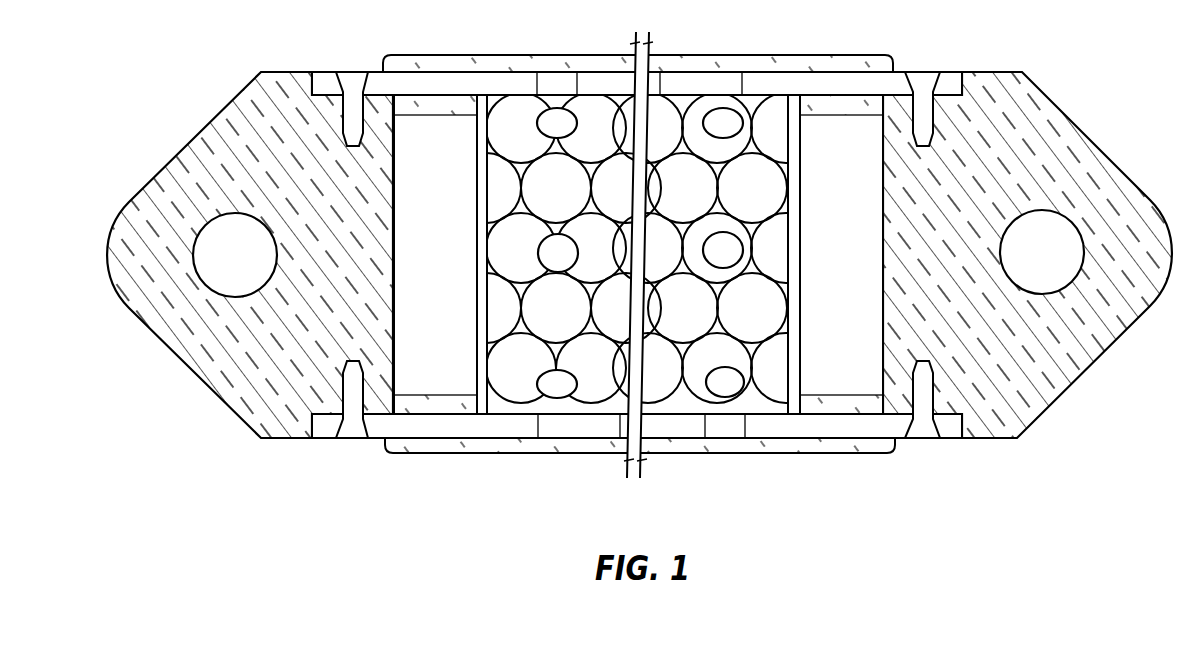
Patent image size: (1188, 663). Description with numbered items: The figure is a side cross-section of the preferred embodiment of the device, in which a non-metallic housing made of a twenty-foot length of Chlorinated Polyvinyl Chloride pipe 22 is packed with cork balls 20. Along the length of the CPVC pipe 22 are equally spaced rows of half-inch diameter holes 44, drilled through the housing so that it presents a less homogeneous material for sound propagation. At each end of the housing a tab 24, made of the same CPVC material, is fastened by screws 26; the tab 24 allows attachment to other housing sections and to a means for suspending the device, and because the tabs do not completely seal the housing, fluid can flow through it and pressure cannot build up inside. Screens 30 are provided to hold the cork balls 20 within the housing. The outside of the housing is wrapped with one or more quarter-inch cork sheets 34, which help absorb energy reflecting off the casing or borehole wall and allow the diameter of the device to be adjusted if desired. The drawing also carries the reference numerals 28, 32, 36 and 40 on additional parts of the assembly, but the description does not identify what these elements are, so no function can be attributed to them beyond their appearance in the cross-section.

The cork balls 20 is at (680, 410).
The CPVC pipe 22 is at (813, 72).
The tab 24 is at (1077, 130).
The screws 26 is at (927, 72).
The right spacer bar 28 is at (788, 412).
The screens 30 is at (495, 102).
The inner block 32 is at (454, 412).
The cork sheets 34 is at (416, 453).
The bottom clamp bar 36 is at (728, 438).
The mounting hole 40 is at (1063, 264).
The holes 44 is at (557, 398).